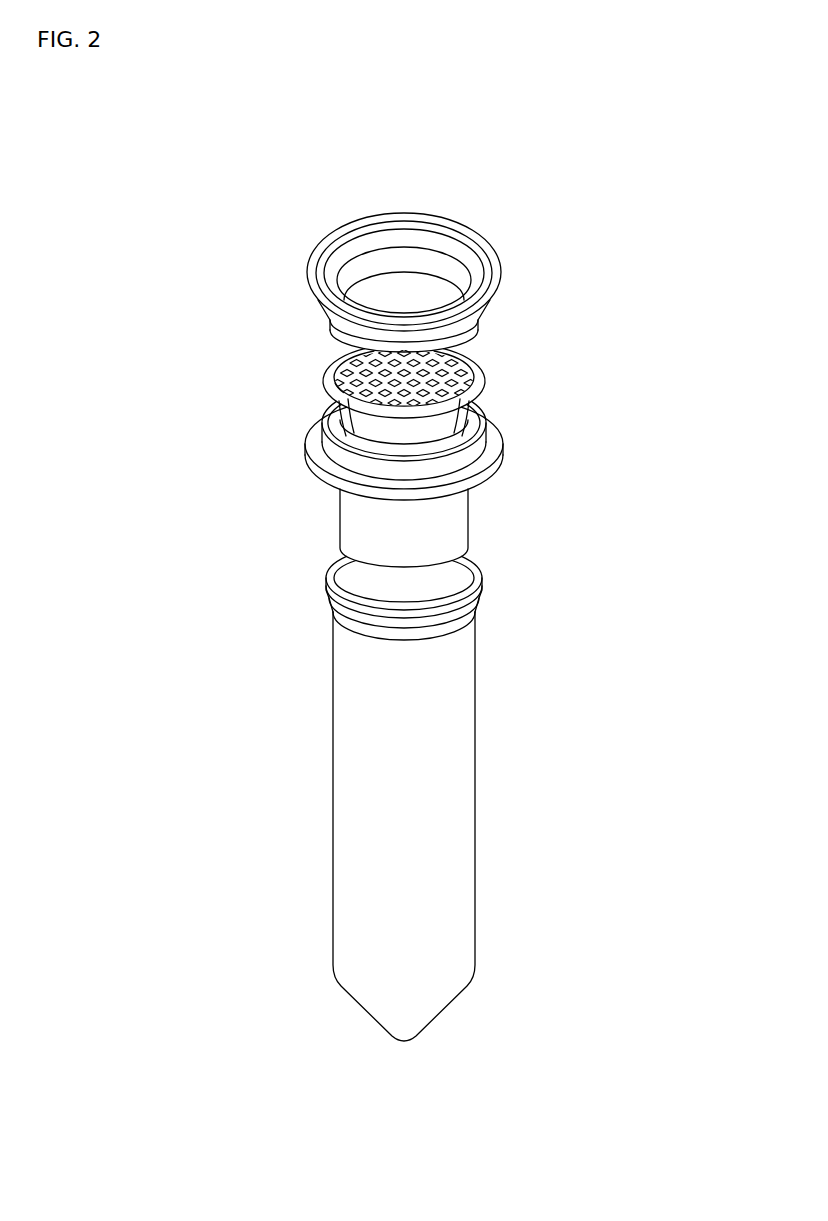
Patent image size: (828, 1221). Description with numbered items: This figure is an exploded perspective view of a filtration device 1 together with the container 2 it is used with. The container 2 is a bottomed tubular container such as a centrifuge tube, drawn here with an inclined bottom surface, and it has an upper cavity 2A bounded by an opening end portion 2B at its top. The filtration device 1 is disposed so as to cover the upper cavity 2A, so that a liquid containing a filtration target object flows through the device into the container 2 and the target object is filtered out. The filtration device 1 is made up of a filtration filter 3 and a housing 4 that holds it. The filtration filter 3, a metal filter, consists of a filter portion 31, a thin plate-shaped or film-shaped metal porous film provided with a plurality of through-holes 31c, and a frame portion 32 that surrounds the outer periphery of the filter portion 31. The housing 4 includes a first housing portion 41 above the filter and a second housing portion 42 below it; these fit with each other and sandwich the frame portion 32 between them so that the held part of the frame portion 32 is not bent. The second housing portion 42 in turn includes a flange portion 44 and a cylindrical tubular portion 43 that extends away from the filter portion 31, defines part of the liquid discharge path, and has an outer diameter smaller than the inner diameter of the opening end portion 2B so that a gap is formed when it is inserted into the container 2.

The filtration device 1 is at (272, 400).
The container 2 is at (447, 782).
The upper cavity 2A is at (450, 566).
The opening end portion 2B is at (474, 577).
The filtration filter 3 is at (567, 323).
The filter portion 31 is at (466, 376).
The through-holes 31c is at (348, 394).
The frame portion 32 is at (483, 346).
The housing 4 is at (670, 295).
The first housing portion 41 is at (490, 291).
The second housing portion 42 is at (481, 451).
The tubular portion 43 is at (353, 521).
The flange portion 44 is at (322, 459).